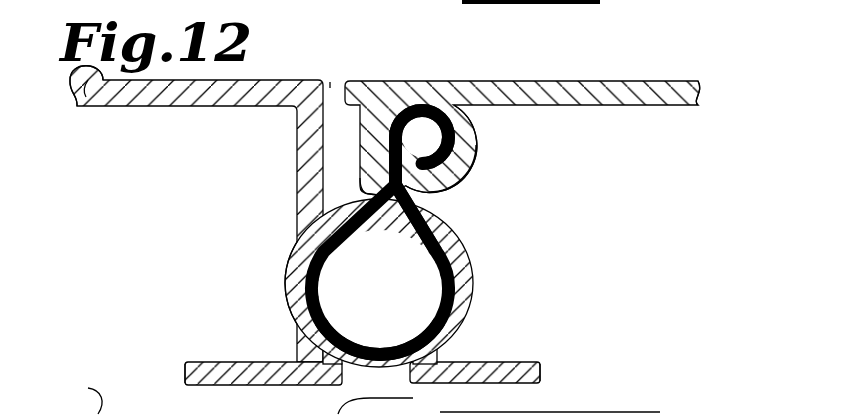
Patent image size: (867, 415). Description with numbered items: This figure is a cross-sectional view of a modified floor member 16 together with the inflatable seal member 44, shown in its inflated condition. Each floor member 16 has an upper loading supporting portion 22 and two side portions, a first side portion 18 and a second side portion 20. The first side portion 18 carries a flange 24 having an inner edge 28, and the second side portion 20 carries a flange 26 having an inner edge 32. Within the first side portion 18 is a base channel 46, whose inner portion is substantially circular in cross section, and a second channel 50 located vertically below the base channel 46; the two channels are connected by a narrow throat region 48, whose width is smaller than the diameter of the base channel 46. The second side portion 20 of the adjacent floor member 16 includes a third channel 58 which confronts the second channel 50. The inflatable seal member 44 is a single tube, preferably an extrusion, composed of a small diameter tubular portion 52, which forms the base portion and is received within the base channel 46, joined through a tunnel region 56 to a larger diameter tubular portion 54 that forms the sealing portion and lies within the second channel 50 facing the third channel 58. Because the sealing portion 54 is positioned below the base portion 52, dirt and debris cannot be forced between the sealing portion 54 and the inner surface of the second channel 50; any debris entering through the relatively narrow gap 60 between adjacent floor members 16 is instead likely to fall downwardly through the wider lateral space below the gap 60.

The floor member 16 is at (100, 120).
The first side portion 18 is at (470, 262).
The second side portion 20 is at (288, 308).
The upper loading supporting portion 22 is at (75, 84).
The flange 24 is at (497, 362).
The flange 26 is at (205, 362).
The inner edge 28 is at (540, 372).
The inner edge 32 is at (185, 372).
The inflatable seal member 44 is at (345, 216).
The base channel 46 is at (468, 116).
The throat region 48 is at (464, 183).
The second channel 50 is at (443, 232).
The small diameter tubular portion 52 is at (414, 110).
The larger diameter tubular portion 54 is at (447, 292).
The tunnel region 56 is at (357, 158).
The third channel 58 is at (296, 272).
The gap 60 is at (340, 80).